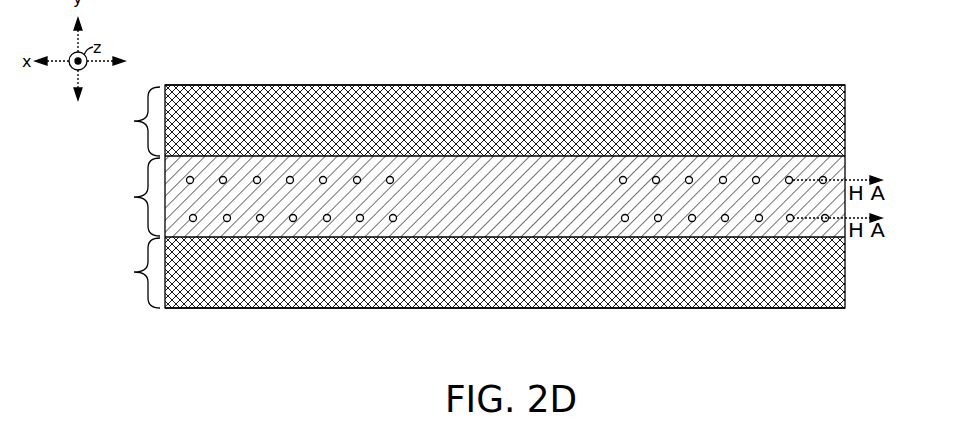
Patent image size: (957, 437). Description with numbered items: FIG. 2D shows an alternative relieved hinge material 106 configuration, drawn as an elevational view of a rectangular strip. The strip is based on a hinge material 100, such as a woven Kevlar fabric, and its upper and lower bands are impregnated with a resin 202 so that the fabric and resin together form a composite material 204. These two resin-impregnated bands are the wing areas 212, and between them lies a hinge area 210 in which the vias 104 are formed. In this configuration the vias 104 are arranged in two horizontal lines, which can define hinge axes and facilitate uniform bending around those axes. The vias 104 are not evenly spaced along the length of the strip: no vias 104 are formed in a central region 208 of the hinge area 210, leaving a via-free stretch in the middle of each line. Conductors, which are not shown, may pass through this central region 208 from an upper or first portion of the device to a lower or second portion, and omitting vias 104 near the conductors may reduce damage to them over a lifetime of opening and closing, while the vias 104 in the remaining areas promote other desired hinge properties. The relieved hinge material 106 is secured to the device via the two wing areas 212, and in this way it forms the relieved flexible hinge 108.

The hinge material 100 is at (592, 227).
The vias 104 is at (327, 222).
The relieved hinge material 106 is at (502, 44).
The relieved flexible hinge 108 is at (436, 361).
The resin 202 is at (505, 196).
The composite material 204 is at (845, 152).
The central region 208 is at (483, 203).
The hinge area 210 is at (89, 197).
The wing areas 212 is at (91, 197).